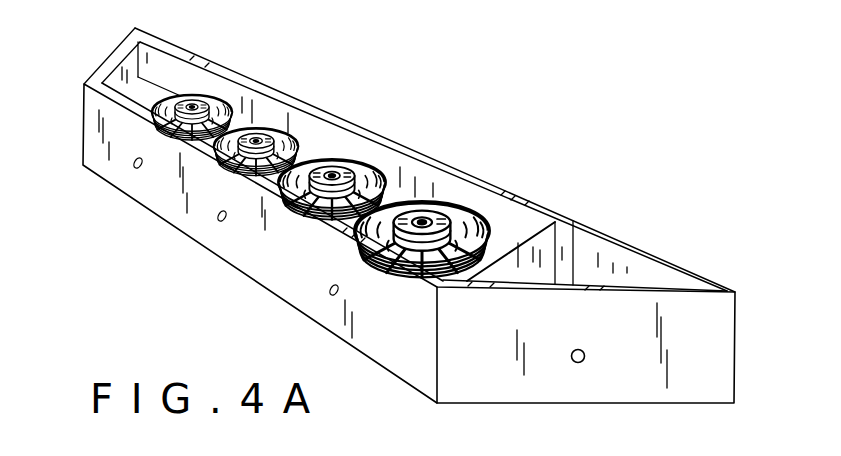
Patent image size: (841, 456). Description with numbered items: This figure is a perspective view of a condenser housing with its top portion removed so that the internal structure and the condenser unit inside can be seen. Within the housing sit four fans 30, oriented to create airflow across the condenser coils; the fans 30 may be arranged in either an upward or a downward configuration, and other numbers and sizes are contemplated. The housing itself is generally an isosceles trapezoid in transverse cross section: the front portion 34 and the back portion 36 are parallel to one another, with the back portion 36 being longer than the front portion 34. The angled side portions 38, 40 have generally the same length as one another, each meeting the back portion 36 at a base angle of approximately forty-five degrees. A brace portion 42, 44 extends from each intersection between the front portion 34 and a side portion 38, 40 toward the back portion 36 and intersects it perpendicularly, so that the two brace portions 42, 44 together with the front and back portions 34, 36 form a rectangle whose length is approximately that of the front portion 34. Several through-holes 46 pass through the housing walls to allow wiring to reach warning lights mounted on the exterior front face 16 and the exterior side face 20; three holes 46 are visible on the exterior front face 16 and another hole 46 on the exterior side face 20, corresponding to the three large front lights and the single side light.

The exterior side face 20 is at (688, 325).
The exterior front face 16 is at (297, 275).
The fans 30 is at (270, 130).
The front portion 34 is at (186, 125).
The back portion 36 is at (333, 120).
The side portion 38 is at (113, 56).
The side portion 40 is at (635, 283).
The brace portion 42 is at (153, 83).
The brace portion 44 is at (521, 262).
The through-holes 46 is at (135, 168).